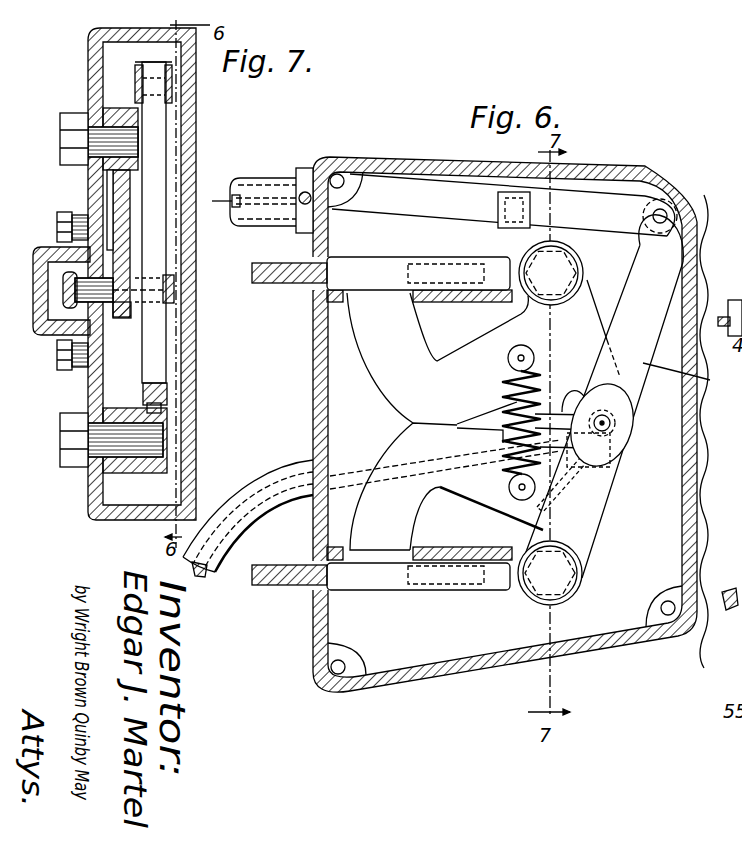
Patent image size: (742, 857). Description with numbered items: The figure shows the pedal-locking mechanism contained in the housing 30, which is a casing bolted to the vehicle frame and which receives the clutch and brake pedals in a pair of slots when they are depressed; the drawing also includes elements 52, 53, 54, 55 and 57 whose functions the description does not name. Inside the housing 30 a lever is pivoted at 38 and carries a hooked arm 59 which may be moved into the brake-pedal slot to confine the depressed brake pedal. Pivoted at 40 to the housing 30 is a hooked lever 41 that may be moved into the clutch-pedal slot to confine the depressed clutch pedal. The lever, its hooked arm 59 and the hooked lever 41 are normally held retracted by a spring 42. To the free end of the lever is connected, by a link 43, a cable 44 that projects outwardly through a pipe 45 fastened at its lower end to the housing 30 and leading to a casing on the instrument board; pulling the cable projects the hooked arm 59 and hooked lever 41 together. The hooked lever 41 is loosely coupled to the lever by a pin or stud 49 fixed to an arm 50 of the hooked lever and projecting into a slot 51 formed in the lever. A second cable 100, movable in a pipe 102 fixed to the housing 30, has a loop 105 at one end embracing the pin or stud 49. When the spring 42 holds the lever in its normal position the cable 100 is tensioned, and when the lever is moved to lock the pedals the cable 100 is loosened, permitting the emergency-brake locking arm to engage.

In FIG. 7, the housing 30 is at (90, 52).
In FIG. 6, the housing 30 is at (600, 163).
In FIG. 7, the pivot 38 is at (135, 447).
In FIG. 6, the pivot 38 is at (563, 573).
In FIG. 7, the pivot 40 is at (115, 133).
In FIG. 6, the pivot 40 is at (561, 277).
In FIG. 7, the hooked lever 41 is at (120, 210).
In FIG. 6, the hooked lever 41 is at (447, 368).
In FIG. 6, the spring 42 is at (487, 422).
In FIG. 7, the link 43 is at (135, 80).
In FIG. 6, the link 43 is at (478, 213).
In FIG. 6, the cable 44 is at (240, 205).
In FIG. 6, the pipe 45 is at (262, 180).
In FIG. 7, the pin or stud 49 is at (58, 262).
In FIG. 6, the pin or stud 49 is at (612, 423).
In FIG. 7, the arm 50 is at (122, 318).
In FIG. 6, the arm 50 is at (577, 387).
In FIG. 6, the slot 51 is at (700, 210).
In FIG. 6, the upper plate 52 is at (372, 268).
In FIG. 6, the lower plate 53 is at (387, 580).
In FIG. 6, the upper plate stop 54 is at (455, 266).
In FIG. 6, the lower plate stop 55 is at (467, 586).
In FIG. 7, the rod extension 57 is at (155, 342).
In FIG. 6, the rod extension 57 is at (689, 379).
In FIG. 6, the cam arm 59 is at (441, 489).
In FIG. 6, the cable 100 is at (200, 573).
In FIG. 6, the pipe 102 is at (270, 478).
In FIG. 7, the loop 105 is at (66, 302).
In FIG. 6, the loop 105 is at (625, 453).